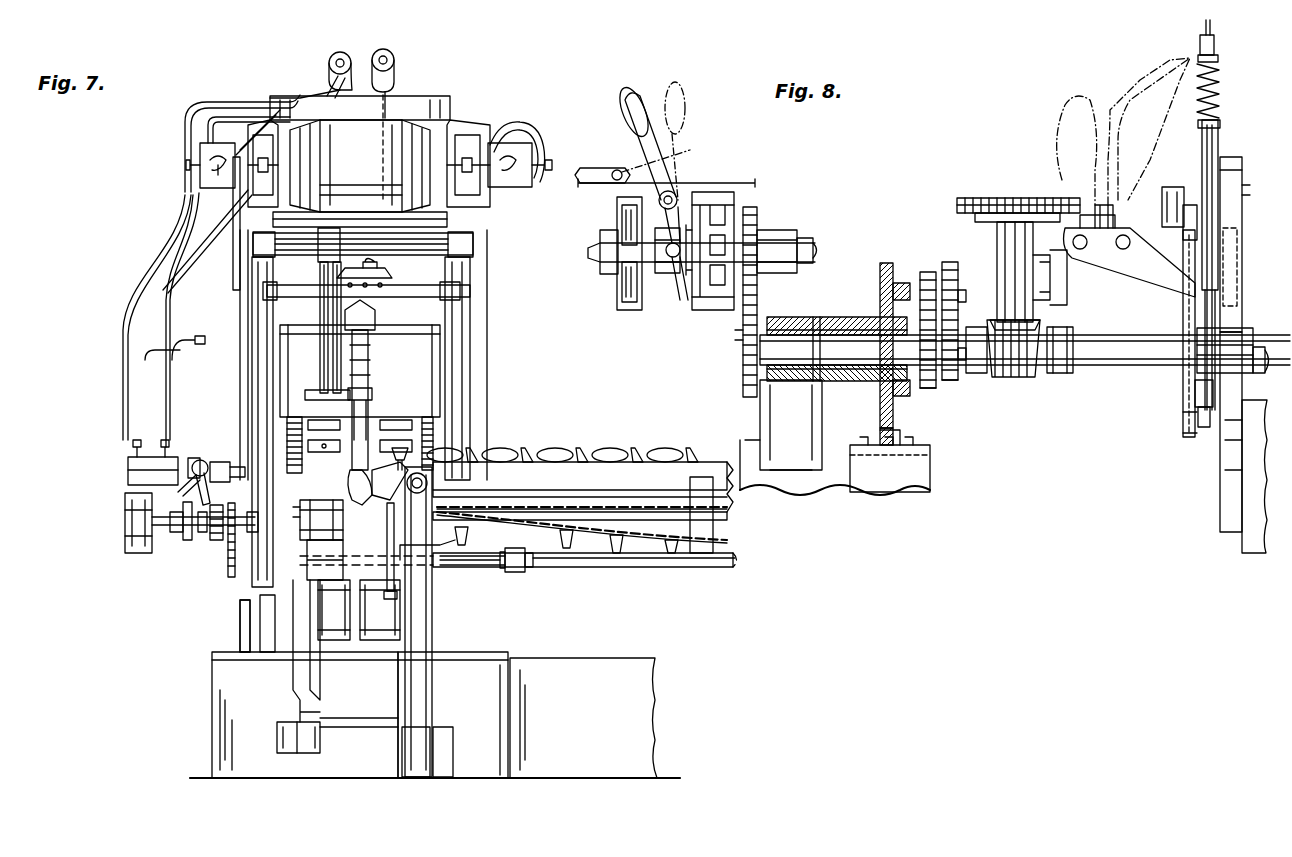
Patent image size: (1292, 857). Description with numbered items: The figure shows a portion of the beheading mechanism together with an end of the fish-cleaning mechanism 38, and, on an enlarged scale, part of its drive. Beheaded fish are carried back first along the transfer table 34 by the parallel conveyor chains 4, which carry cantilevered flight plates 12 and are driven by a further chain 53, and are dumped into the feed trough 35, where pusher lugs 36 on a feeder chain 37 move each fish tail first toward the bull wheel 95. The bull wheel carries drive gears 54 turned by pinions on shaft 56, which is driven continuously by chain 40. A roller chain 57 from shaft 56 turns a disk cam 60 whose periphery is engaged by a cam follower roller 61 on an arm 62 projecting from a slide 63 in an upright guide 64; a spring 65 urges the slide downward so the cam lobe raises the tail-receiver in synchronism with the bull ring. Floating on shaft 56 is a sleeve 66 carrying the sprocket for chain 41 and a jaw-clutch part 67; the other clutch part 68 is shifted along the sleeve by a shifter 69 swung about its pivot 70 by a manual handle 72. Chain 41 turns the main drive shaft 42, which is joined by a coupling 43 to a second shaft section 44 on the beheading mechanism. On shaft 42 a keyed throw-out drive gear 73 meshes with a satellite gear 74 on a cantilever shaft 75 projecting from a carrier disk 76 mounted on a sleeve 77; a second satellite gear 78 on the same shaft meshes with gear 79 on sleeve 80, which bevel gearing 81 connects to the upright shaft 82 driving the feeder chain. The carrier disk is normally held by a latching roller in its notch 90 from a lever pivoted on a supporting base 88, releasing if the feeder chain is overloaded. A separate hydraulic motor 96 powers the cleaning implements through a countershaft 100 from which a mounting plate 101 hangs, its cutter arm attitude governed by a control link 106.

In FIG. 7, the endless conveyor chain 4 is at (603, 529).
In FIG. 7, the flight plate 12 is at (498, 452).
In FIG. 7, the transfer table 34 is at (628, 472).
In FIG. 7, the feed trough 35 is at (385, 508).
In FIG. 7, the pusher lug 36 is at (300, 505).
In FIG. 7, the feeder chain 37 is at (323, 493).
In FIG. 8, the feeder chain 37 is at (1007, 203).
In FIG. 7, the fish-cleaning mechanism 38 is at (502, 333).
In FIG. 7, the chain 40 is at (125, 518).
In FIG. 7, the chain 41 is at (230, 552).
In FIG. 8, the chain 41 is at (740, 313).
In FIG. 7, the main drive shaft 42 is at (231, 575).
In FIG. 8, the main drive shaft 42 is at (740, 345).
In FIG. 7, the coupling 43 is at (527, 578).
In FIG. 7, the second shaft section 44 is at (740, 566).
In FIG. 7, the chain 53 is at (542, 505).
In FIG. 7, the drive gear 54 is at (292, 418).
In FIG. 8, the drive gear 54 is at (1210, 358).
In FIG. 8, the shaft 56 is at (808, 243).
In FIG. 7, the roller chain 57 is at (471, 545).
In FIG. 7, the disk cam 60 is at (393, 595).
In FIG. 8, the disk cam 60 is at (1182, 410).
In FIG. 8, the cam follower roller 61 is at (1197, 210).
In FIG. 8, the arm 62 is at (1167, 188).
In FIG. 8, the slide 63 is at (1227, 250).
In FIG. 8, the upright guide 64 is at (1227, 315).
In FIG. 8, the spring 65 is at (1222, 74).
In FIG. 8, the sleeve 66 is at (776, 232).
In FIG. 7, the jaw-clutch part 67 is at (198, 560).
In FIG. 8, the jaw-clutch part 67 is at (737, 207).
In FIG. 7, the jaw-clutch part 68 is at (210, 541).
In FIG. 8, the jaw-clutch part 68 is at (693, 307).
In FIG. 8, the shifter 69 is at (662, 273).
In FIG. 8, the mounting pivot 70 is at (683, 180).
In FIG. 7, the handle 72 is at (200, 461).
In FIG. 8, the handle 72 is at (640, 136).
In FIG. 8, the throw-out drive gear 73 is at (928, 390).
In FIG. 8, the satellite gear 74 is at (928, 272).
In FIG. 8, the shaft 75 is at (884, 295).
In FIG. 8, the carrier disk 76 is at (888, 262).
In FIG. 7, the sleeve 77 is at (262, 602).
In FIG. 8, the sleeve 77 is at (847, 314).
In FIG. 8, the second satellite gear 78 is at (957, 271).
In FIG. 8, the gear 79 is at (950, 386).
In FIG. 8, the sleeve 80 is at (966, 333).
In FIG. 8, the bevel gearing 81 is at (1015, 342).
In FIG. 8, the upright shaft 82 is at (1007, 233).
In FIG. 8, the supporting base 88 is at (880, 424).
In FIG. 8, the notch 90 is at (883, 432).
In FIG. 7, the bull wheel 95 is at (375, 645).
In FIG. 7, the hydraulic motor 96 is at (128, 476).
In FIG. 7, the countershaft 100 is at (422, 247).
In FIG. 7, the mounting plate 101 is at (326, 308).
In FIG. 7, the control link 106 is at (366, 348).